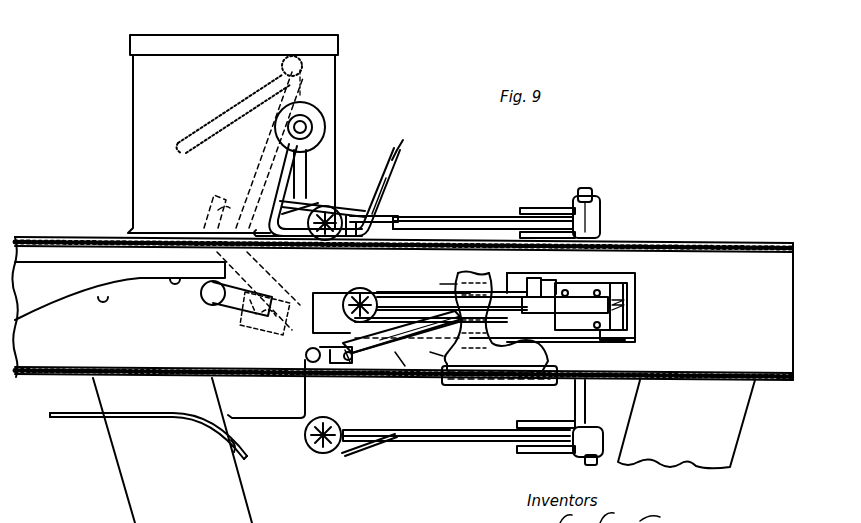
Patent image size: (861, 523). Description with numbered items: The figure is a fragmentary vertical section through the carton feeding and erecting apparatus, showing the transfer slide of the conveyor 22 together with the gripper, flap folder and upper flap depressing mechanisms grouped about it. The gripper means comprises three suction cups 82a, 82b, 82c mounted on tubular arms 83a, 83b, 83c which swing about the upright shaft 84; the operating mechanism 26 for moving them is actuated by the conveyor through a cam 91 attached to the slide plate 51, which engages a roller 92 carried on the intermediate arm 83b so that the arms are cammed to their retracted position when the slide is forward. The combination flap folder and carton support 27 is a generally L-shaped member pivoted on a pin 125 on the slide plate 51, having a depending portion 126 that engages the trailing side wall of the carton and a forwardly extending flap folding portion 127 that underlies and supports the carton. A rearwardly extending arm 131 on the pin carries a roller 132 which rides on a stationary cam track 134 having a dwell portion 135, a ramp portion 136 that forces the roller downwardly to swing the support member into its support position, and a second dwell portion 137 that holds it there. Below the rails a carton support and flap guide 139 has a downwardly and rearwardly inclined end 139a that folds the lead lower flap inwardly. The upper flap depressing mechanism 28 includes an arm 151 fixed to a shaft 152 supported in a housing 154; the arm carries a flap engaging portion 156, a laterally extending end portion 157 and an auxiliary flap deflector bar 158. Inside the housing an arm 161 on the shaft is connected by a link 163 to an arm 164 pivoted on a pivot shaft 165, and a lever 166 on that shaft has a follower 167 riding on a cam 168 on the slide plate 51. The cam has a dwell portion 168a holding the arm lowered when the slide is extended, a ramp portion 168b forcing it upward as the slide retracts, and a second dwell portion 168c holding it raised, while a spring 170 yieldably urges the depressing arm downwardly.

The housing 154 is at (133, 90).
The spring 170 is at (232, 106).
The arm 161 is at (306, 84).
The shaft 152 is at (306, 124).
The link 163 is at (236, 158).
The auxiliary flap deflector bar 158 is at (302, 196).
The upper flap depressing mechanism 28 is at (396, 152).
The end portion 157 is at (386, 186).
The arm 151 is at (283, 195).
The suction cup 82a is at (336, 210).
The flap engaging portion 156 is at (376, 202).
The tubular arm 83a is at (457, 218).
The dwell portion 168a is at (173, 278).
The cam 168 is at (81, 306).
The ramp portion 168b is at (100, 295).
The second dwell portion 168c is at (32, 320).
The follower 167 is at (201, 293).
The lever 166 is at (216, 306).
The pivot shaft 165 is at (250, 326).
The arm 164 is at (258, 272).
The suction cup 82b is at (353, 293).
The tubular arm 83b is at (393, 296).
The operating mechanism 26 is at (632, 298).
The roller 92 is at (540, 286).
The dwell portion 135 is at (576, 338).
The cam 91 is at (442, 289).
The slide plate 51 is at (476, 273).
The conveyor 22 is at (500, 386).
The ramp portion 136 is at (416, 340).
The rearwardly extending arm 131 is at (334, 350).
The pin 125 is at (306, 353).
The depending portion 126 is at (300, 383).
The flap folding portion 127 is at (268, 420).
The combination flap folder and carton support 27 is at (311, 396).
The roller 132 is at (357, 360).
The second dwell portion 137 is at (398, 364).
The cam track 134 is at (437, 358).
The carton support and flap guide 139 is at (147, 418).
The inclined end 139a is at (232, 445).
The suction cup 82c is at (318, 452).
The tubular arm 83c is at (440, 440).
The shaft 84 is at (592, 401).